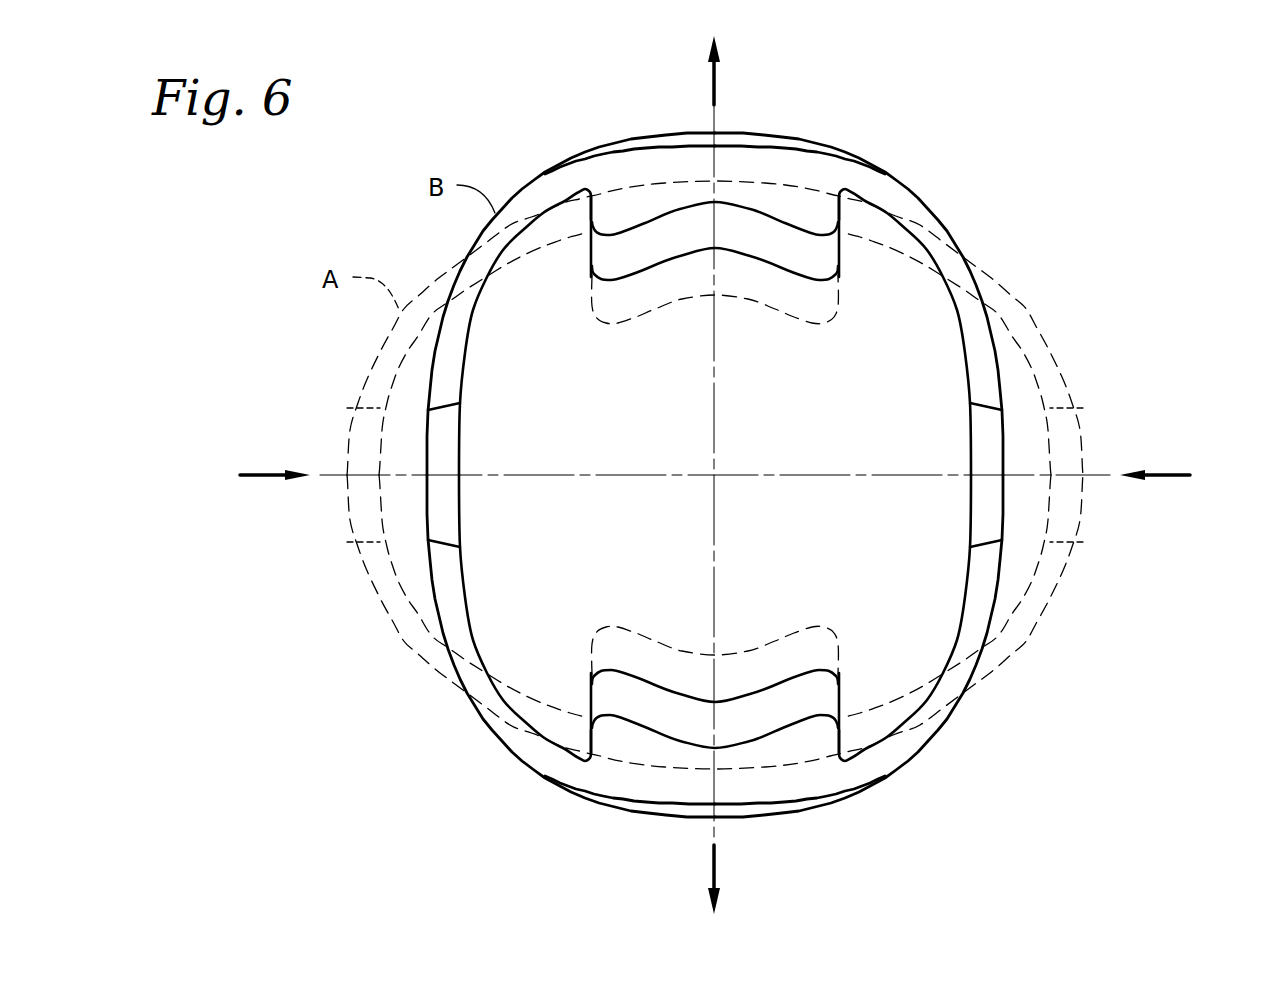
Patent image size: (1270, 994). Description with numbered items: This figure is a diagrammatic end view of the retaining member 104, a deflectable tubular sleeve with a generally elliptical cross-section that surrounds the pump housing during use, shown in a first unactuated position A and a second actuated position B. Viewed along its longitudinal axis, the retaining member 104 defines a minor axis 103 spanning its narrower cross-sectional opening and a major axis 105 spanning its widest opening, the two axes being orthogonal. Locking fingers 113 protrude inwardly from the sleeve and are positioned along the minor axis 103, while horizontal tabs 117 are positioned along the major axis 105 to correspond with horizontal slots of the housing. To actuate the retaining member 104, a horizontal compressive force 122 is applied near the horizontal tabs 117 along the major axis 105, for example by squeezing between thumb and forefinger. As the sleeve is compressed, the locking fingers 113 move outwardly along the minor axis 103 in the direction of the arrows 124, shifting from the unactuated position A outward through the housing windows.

The minor axis 103 is at (713, 227).
The retaining member 104 is at (930, 207).
The major axis 105 is at (920, 477).
The locking fingers 113 is at (843, 220).
The horizontal tabs 117 is at (430, 517).
The horizontal compressive force 122 is at (262, 470).
The arrows 124 is at (717, 83).